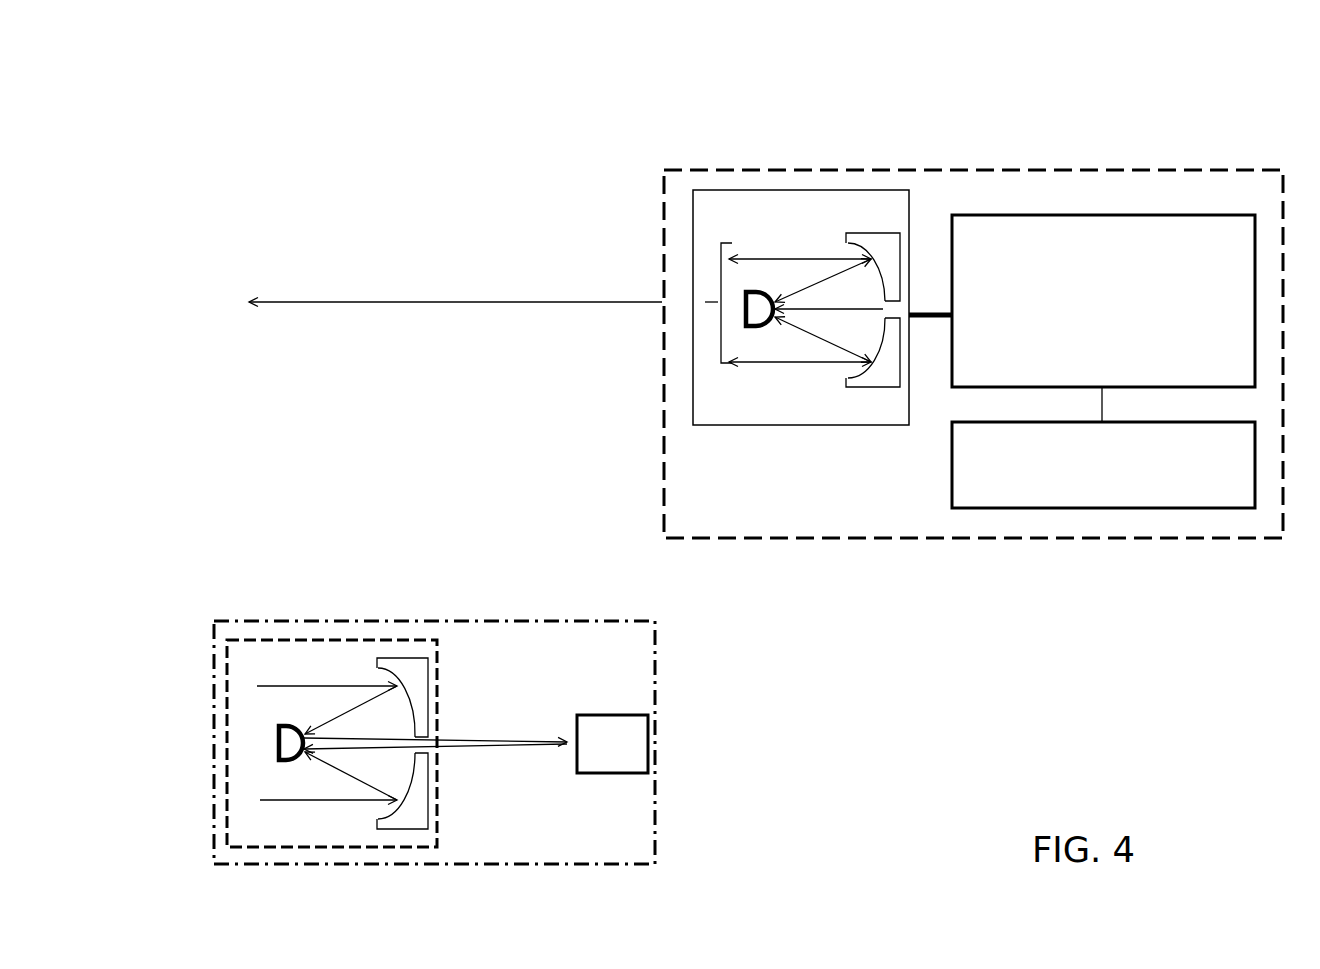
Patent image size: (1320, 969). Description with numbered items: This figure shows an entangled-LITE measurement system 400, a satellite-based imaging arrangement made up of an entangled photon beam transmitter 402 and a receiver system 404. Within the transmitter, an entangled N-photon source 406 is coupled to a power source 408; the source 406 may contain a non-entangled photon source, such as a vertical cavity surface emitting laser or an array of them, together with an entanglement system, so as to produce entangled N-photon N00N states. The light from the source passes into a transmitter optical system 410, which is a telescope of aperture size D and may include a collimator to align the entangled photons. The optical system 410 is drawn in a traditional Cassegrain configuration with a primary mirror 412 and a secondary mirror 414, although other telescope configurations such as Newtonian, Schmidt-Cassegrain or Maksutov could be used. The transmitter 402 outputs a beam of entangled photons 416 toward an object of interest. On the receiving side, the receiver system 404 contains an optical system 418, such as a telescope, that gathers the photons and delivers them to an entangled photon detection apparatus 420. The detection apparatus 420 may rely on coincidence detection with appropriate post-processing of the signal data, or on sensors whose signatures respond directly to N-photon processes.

The entangled-LITE measurement system 400 is at (237, 165).
The entangled photon beam transmitter 402 is at (1255, 174).
The receiver system 404 is at (667, 664).
The entangled N-photon source 406 is at (1053, 211).
The power source 408 is at (1153, 511).
The transmitter optical system 410 is at (808, 429).
The primary mirror 412 is at (870, 338).
The secondary mirror 414 is at (757, 282).
The beam of entangled photons 416 is at (435, 279).
The optical system 418 is at (450, 672).
The entangled photon detection apparatus 420 is at (612, 778).